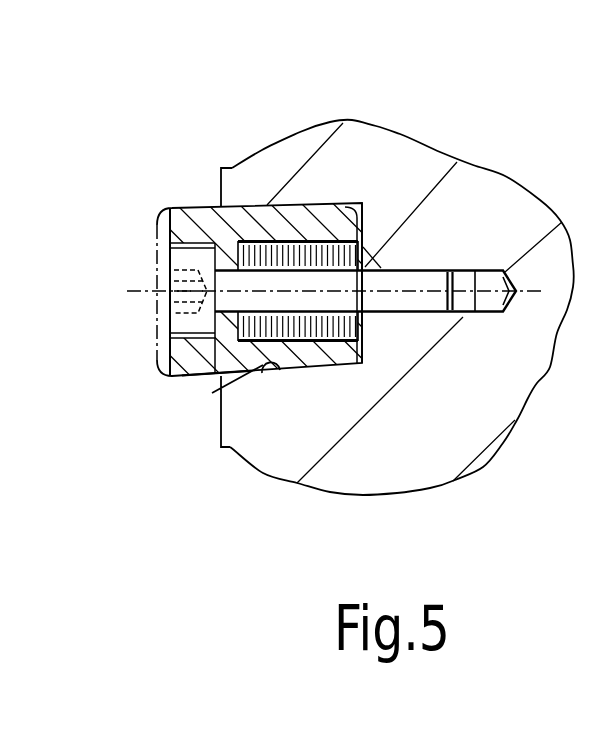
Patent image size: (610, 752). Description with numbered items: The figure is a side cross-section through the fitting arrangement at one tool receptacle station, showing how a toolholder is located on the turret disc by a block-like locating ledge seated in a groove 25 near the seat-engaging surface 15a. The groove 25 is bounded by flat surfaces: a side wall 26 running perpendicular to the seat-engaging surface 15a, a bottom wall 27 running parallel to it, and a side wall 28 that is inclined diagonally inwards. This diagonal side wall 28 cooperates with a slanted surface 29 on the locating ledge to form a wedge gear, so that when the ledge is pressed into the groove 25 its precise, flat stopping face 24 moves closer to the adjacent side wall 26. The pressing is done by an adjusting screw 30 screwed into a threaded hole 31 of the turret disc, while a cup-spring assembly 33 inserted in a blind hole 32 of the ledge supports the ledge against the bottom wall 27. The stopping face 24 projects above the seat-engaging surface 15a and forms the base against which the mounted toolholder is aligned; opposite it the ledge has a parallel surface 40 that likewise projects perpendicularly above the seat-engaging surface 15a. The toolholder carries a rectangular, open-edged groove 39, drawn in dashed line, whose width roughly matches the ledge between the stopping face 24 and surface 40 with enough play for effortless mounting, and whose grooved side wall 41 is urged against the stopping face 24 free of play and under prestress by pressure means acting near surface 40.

The seat-engaging surface 15a is at (212, 393).
The stopping face 24 is at (198, 205).
The groove 25 is at (397, 137).
The side wall 26 is at (253, 207).
The bottom wall 27 is at (368, 205).
The diagonal side wall 28 is at (317, 372).
The slanted surface 29 is at (260, 373).
The adjusting screw 30 is at (155, 278).
The threaded hole 31 is at (460, 277).
The blind hole 32 is at (313, 242).
The cup-spring assembly 33 is at (367, 323).
The groove 39 is at (158, 378).
The parallel surface 40 is at (196, 378).
The grooved side wall 41 is at (160, 206).